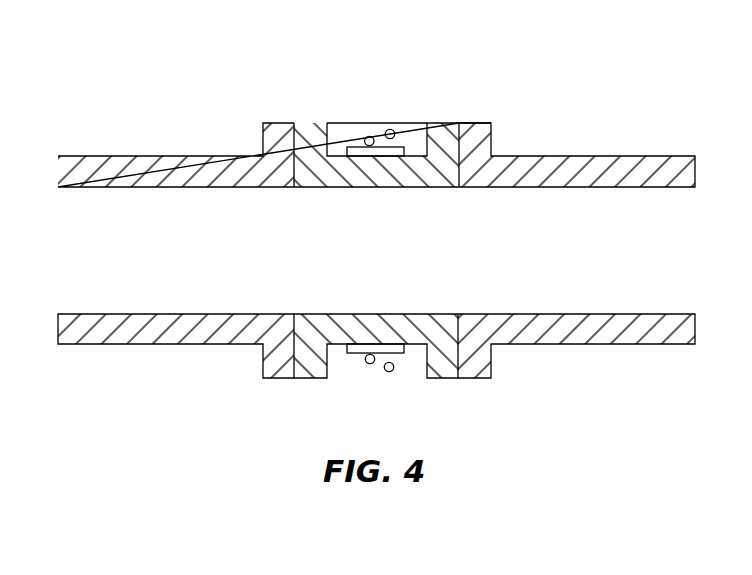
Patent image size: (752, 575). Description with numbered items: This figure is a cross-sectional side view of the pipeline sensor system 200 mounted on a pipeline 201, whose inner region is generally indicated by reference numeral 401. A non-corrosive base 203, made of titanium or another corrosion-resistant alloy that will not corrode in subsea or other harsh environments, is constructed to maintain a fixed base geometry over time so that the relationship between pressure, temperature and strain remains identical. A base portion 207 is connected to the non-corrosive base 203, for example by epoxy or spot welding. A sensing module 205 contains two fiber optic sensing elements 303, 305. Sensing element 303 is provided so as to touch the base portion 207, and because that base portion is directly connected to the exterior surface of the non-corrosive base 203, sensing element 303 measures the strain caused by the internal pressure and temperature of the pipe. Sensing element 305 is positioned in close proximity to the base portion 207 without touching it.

The pipeline sensor system 200 is at (198, 45).
The pipeline 201 is at (561, 156).
The non-corrosive base 203 is at (443, 123).
The sensing module 205 is at (346, 118).
The base portion 207 is at (403, 147).
The fiber optic sensing element 303 is at (369, 136).
The fiber optic sensing element 305 is at (390, 129).
The inner region of pipeline 401 is at (395, 261).